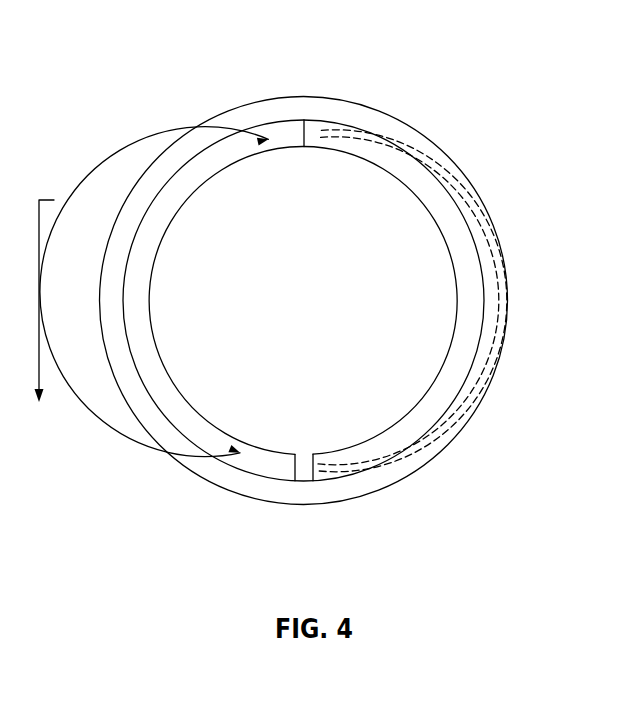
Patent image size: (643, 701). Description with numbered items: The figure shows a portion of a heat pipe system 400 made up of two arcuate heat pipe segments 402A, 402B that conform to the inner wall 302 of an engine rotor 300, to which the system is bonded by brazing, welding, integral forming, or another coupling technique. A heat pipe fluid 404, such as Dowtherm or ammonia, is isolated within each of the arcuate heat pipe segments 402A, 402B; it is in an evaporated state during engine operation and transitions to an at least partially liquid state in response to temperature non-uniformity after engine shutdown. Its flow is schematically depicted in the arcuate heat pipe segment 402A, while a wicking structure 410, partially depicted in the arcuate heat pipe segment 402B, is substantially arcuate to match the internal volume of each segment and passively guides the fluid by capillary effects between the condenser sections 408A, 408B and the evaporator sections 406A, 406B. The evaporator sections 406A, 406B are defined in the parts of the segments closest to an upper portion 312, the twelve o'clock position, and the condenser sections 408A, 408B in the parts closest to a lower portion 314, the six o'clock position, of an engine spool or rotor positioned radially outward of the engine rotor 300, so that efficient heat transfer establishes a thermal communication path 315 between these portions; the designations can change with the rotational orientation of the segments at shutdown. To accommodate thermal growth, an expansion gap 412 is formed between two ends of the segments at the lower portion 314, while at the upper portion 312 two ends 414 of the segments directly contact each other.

The engine rotor 300 is at (417, 130).
The inner wall 302 is at (200, 152).
The upper portion 312 is at (304, 78).
The lower portion 314 is at (297, 524).
The thermal communication path 315 is at (41, 370).
The heat pipe system 400 is at (328, 235).
The arcuate heat pipe segment 402A is at (148, 230).
The arcuate heat pipe segment 402B is at (491, 257).
The heat pipe fluid 404 is at (180, 431).
The evaporator section 406A is at (290, 133).
The evaporator section 406B is at (310, 148).
The condenser section 408A is at (277, 460).
The condenser section 408B is at (334, 470).
The wicking structure 410 is at (374, 142).
The expansion gap 412 is at (308, 437).
The ends 414 is at (317, 130).